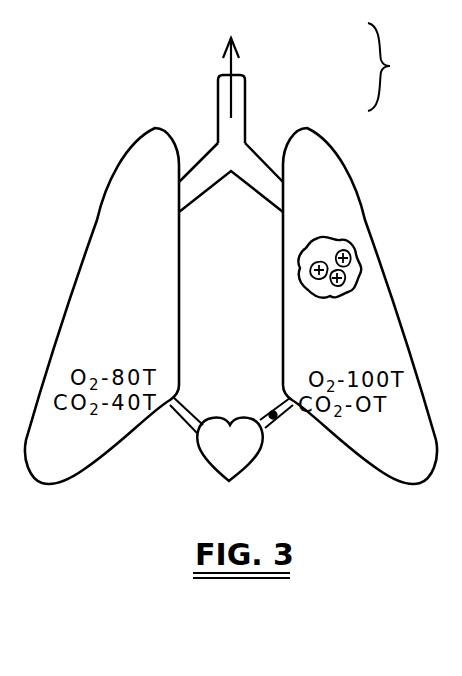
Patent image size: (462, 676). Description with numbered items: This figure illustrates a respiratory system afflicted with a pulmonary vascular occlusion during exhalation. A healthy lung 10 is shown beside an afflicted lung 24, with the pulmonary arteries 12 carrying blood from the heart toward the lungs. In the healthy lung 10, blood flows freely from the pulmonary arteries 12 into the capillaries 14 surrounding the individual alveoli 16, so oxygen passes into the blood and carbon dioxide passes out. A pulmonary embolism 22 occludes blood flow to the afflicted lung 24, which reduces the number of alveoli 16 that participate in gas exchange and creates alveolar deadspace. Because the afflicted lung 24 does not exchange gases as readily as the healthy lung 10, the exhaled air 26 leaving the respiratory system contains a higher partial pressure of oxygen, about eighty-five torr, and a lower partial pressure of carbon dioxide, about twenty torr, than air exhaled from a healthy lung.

The lungs 10 is at (100, 225).
The afflicted lung 24 is at (362, 225).
The capillaries 14 is at (313, 270).
The alveoli 16 is at (328, 283).
The pulmonary embolism 22 is at (271, 411).
The pulmonary arteries 12 is at (274, 430).
The exhaled air 26 is at (342, 67).